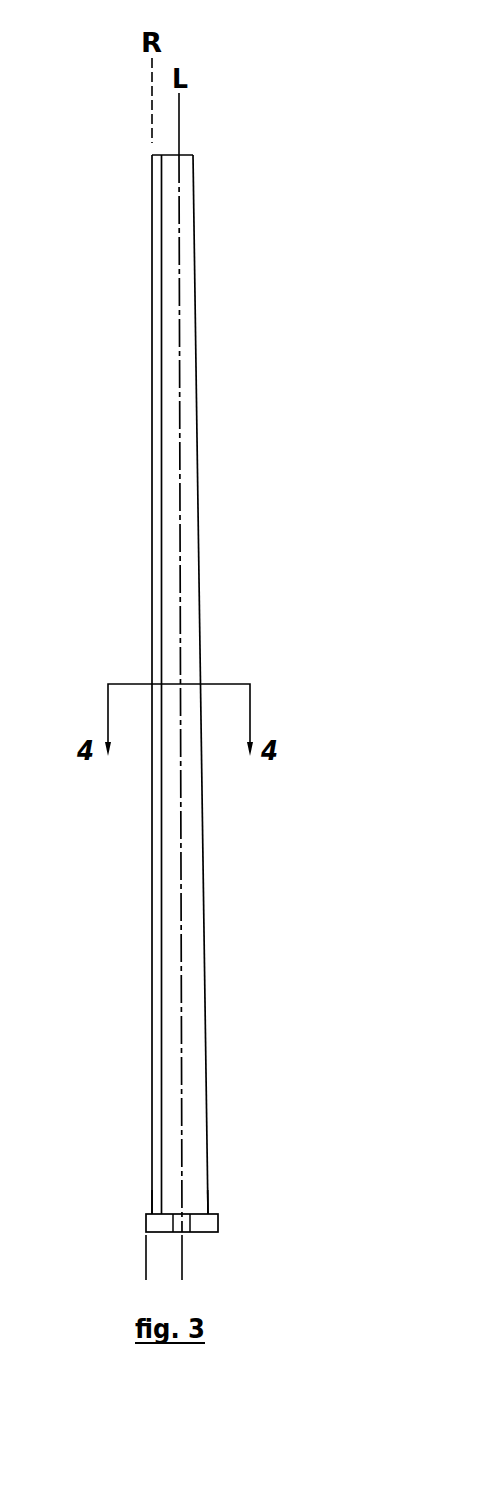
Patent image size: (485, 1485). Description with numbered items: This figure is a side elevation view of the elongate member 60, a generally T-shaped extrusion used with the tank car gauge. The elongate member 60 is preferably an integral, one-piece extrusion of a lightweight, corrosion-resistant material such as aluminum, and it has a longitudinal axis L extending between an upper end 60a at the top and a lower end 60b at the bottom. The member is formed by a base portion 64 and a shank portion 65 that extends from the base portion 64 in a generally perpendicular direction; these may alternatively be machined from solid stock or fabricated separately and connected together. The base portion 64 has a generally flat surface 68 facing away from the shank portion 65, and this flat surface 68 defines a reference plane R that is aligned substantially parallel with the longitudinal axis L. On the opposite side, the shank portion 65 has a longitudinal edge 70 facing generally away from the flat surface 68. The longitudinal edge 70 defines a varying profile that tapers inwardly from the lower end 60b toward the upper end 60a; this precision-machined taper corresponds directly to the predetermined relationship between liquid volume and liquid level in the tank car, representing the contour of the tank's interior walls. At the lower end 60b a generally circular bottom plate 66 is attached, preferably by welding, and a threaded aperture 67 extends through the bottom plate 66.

The elongate member 60 is at (174, 696).
The upper end 60a is at (187, 155).
The lower end 60b is at (208, 1203).
The base portion 64 is at (160, 995).
The shank portion 65 is at (193, 947).
The bottom plate 66 is at (205, 1232).
The threaded aperture 67 is at (178, 1220).
The flat surface 68 is at (152, 862).
The longitudinal edge 70 is at (203, 918).